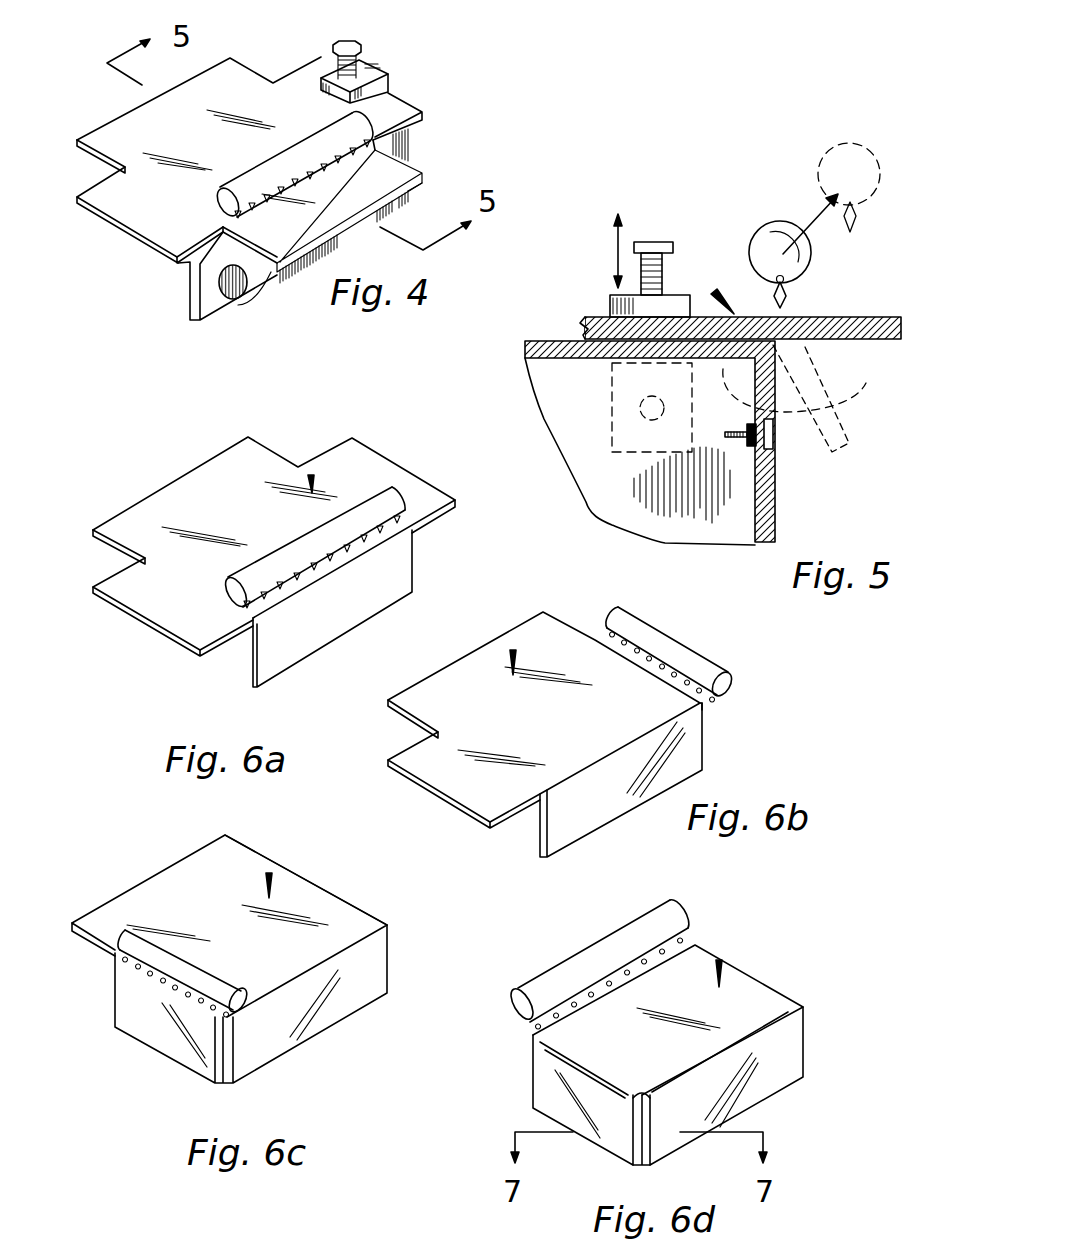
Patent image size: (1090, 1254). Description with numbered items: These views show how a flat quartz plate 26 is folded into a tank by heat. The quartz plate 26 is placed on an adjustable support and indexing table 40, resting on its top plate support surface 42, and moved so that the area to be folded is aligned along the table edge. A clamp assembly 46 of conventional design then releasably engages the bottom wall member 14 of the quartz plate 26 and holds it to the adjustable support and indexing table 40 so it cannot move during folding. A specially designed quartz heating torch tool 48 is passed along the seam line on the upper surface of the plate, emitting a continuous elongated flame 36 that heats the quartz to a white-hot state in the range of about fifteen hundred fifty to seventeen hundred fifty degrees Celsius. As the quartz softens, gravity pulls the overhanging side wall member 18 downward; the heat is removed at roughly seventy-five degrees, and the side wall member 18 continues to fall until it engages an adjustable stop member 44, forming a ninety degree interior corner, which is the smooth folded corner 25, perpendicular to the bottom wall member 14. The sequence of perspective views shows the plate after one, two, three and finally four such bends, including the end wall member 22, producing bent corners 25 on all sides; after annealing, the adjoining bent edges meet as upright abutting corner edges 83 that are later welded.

In FIG. 6D, the bottom wall member 14 is at (748, 1013).
In FIG. 4, the side wall member 18 is at (342, 208).
In FIG. 5, the side wall member 18 is at (828, 317).
In FIG. 6D, the side wall member 18 is at (788, 1040).
In FIG. 6D, the end wall member 22 is at (560, 1087).
In FIG. 5, the folded corner 25 is at (808, 390).
In FIG. 6B, the folded corner 25 is at (705, 703).
In FIG. 6C, the folded corner 25 is at (275, 862).
In FIG. 4, the quartz plate 26 is at (229, 50).
In FIG. 5, the quartz plate 26 is at (734, 314).
In FIG. 6A, the quartz plate 26 is at (310, 475).
In FIG. 6B, the quartz plate 26 is at (512, 650).
In FIG. 6C, the quartz plate 26 is at (268, 873).
In FIG. 6D, the quartz plate 26 is at (720, 960).
In FIG. 4, the continuous flame 36 is at (423, 184).
In FIG. 4, the adjustable support and indexing table 40 is at (380, 150).
In FIG. 5, the adjustable support and indexing table 40 is at (568, 341).
In FIG. 5, the top plate support surface 42 is at (605, 315).
In FIG. 5, the adjustable stop member 44 is at (773, 455).
In FIG. 4, the clamp assembly 46 is at (358, 62).
In FIG. 5, the clamp assembly 46 is at (676, 292).
In FIG. 4, the quartz heating torch tool 48 is at (357, 132).
In FIG. 5, the quartz heating torch tool 48 is at (773, 221).
In FIG. 6A, the quartz heating torch tool 48 is at (342, 523).
In FIG. 6B, the quartz heating torch tool 48 is at (697, 670).
In FIG. 6C, the quartz heating torch tool 48 is at (203, 977).
In FIG. 6D, the quartz heating torch tool 48 is at (597, 943).
In FIG. 6D, the upright abutting corner edge 83 is at (642, 1165).